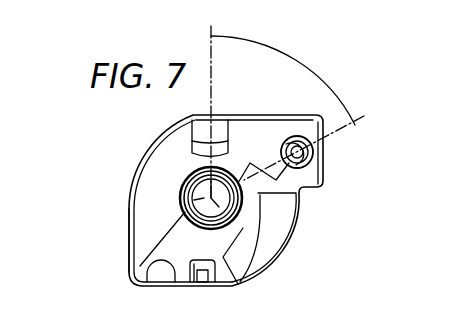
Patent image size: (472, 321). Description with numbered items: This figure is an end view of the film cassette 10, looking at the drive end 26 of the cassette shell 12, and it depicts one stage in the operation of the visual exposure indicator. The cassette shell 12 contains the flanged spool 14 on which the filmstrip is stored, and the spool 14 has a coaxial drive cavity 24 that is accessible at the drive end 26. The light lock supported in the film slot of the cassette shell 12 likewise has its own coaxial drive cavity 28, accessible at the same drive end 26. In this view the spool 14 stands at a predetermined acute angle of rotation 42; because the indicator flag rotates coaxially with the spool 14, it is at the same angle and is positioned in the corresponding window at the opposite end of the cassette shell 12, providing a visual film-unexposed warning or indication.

The film cassette 10 is at (119, 182).
The cassette shell 12 is at (134, 207).
The flanged spool 14 is at (142, 218).
The coaxial drive cavity 24 is at (183, 190).
The drive end 26 is at (147, 242).
The coaxial drive cavity 28 is at (310, 162).
The predetermined acute angle of rotation 42 is at (219, 33).